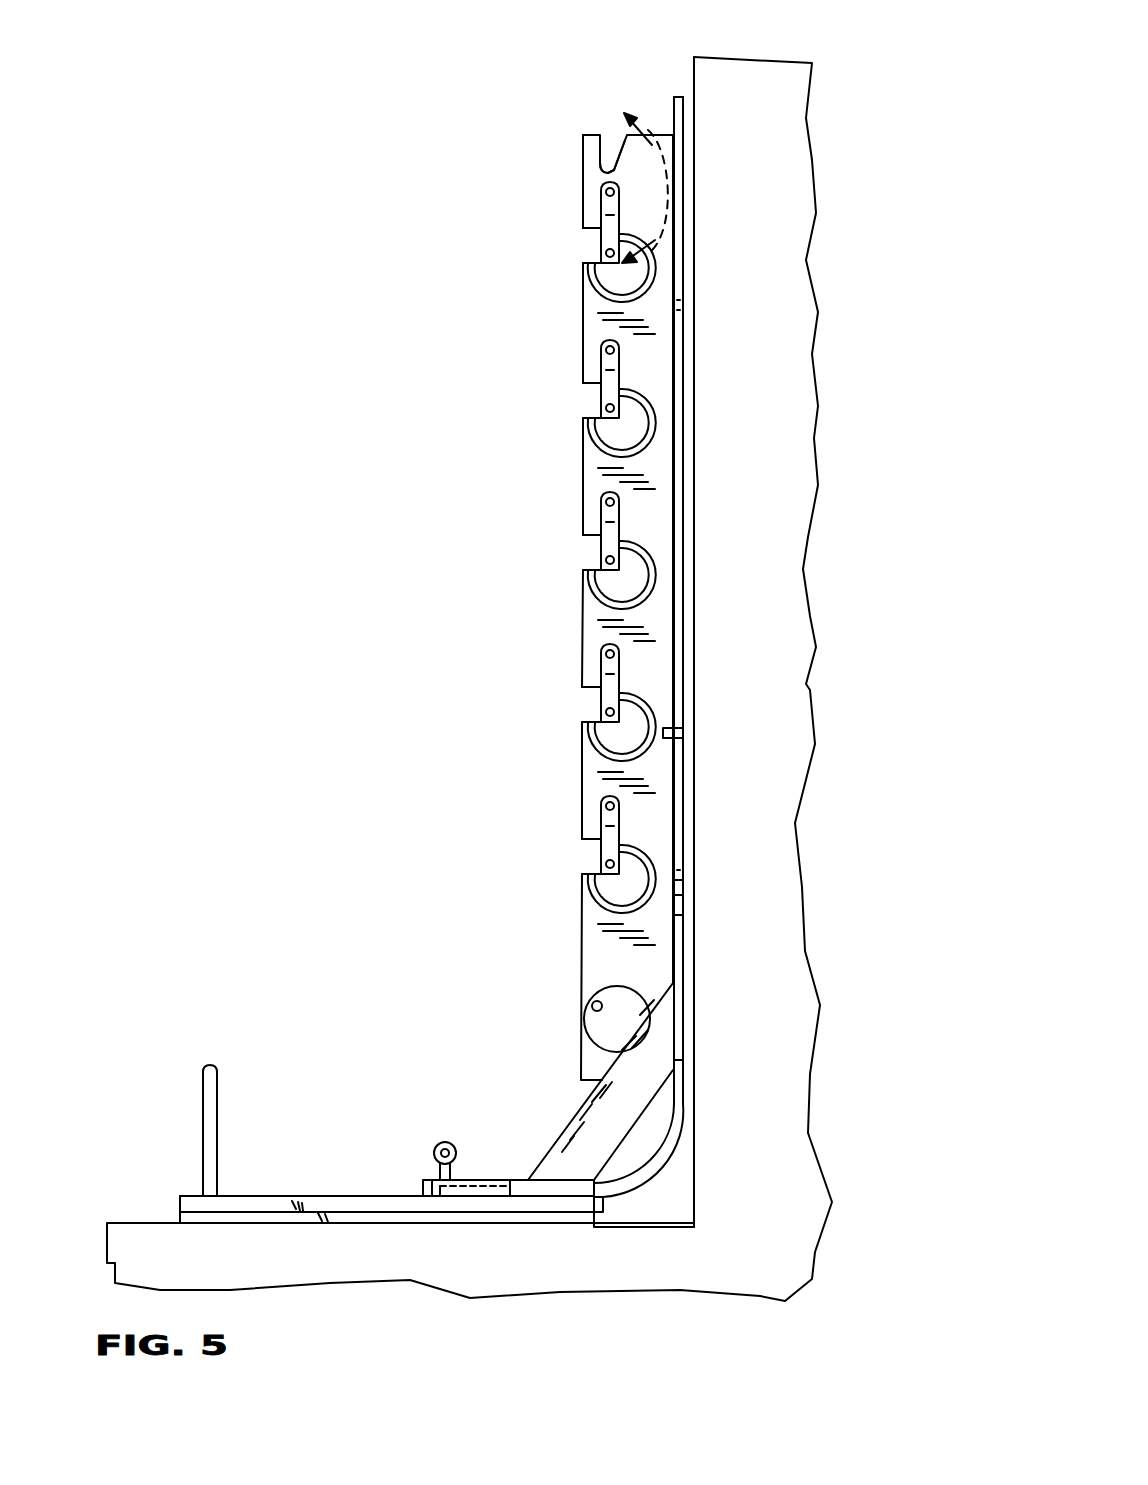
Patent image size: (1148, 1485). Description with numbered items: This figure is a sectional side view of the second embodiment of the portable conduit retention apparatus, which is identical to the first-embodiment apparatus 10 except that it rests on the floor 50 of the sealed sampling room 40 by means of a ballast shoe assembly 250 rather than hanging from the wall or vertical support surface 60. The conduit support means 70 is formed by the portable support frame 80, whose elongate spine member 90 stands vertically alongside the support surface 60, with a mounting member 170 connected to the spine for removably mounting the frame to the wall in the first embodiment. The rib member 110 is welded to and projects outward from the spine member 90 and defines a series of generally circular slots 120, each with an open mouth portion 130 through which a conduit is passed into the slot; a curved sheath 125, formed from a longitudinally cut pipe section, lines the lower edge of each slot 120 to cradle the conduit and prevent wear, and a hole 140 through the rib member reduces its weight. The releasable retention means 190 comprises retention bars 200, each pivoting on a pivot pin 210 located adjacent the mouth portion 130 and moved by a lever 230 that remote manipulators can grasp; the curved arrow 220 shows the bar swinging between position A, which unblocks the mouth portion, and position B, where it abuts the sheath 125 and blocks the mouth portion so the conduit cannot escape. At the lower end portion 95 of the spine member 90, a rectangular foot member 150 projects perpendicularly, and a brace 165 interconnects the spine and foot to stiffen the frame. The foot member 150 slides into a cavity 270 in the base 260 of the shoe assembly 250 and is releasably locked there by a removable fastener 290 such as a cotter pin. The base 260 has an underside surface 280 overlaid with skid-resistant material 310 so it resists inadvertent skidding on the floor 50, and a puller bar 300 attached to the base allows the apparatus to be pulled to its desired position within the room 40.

The portable conduit retention apparatus 10 is at (372, 112).
The laboratory analytical sampling cell or room 40 is at (796, 118).
The floor 50 is at (118, 1223).
The wall or vertical support surface 60 is at (694, 62).
The portable conduit support means 70 is at (372, 165).
The portable support frame 80 is at (553, 120).
The spine member 90 is at (676, 99).
The end portion 95 is at (678, 1047).
The rib member 110 is at (583, 158).
The slot 120 is at (645, 396).
The sheath 125 is at (643, 288).
The open mouth portion 130 is at (586, 390).
The hole 140 is at (597, 1006).
The foot member 150 is at (498, 1192).
The brace 165 is at (597, 1098).
The mounting member 170 is at (677, 903).
The releasable retention means 190 is at (540, 242).
The retention bar 200 is at (583, 240).
The pivot pin 210 is at (601, 185).
The curved arrow 220 is at (668, 205).
The lever 230 is at (600, 256).
The shoe assembly 250 is at (300, 1026).
The base 260 is at (372, 1214).
The cavity 270 is at (465, 1190).
The underside surface 280 is at (270, 1214).
The removable fastener 290 is at (437, 1150).
The puller bar 300 is at (217, 1080).
The skid-resistant material 310 is at (200, 1216).